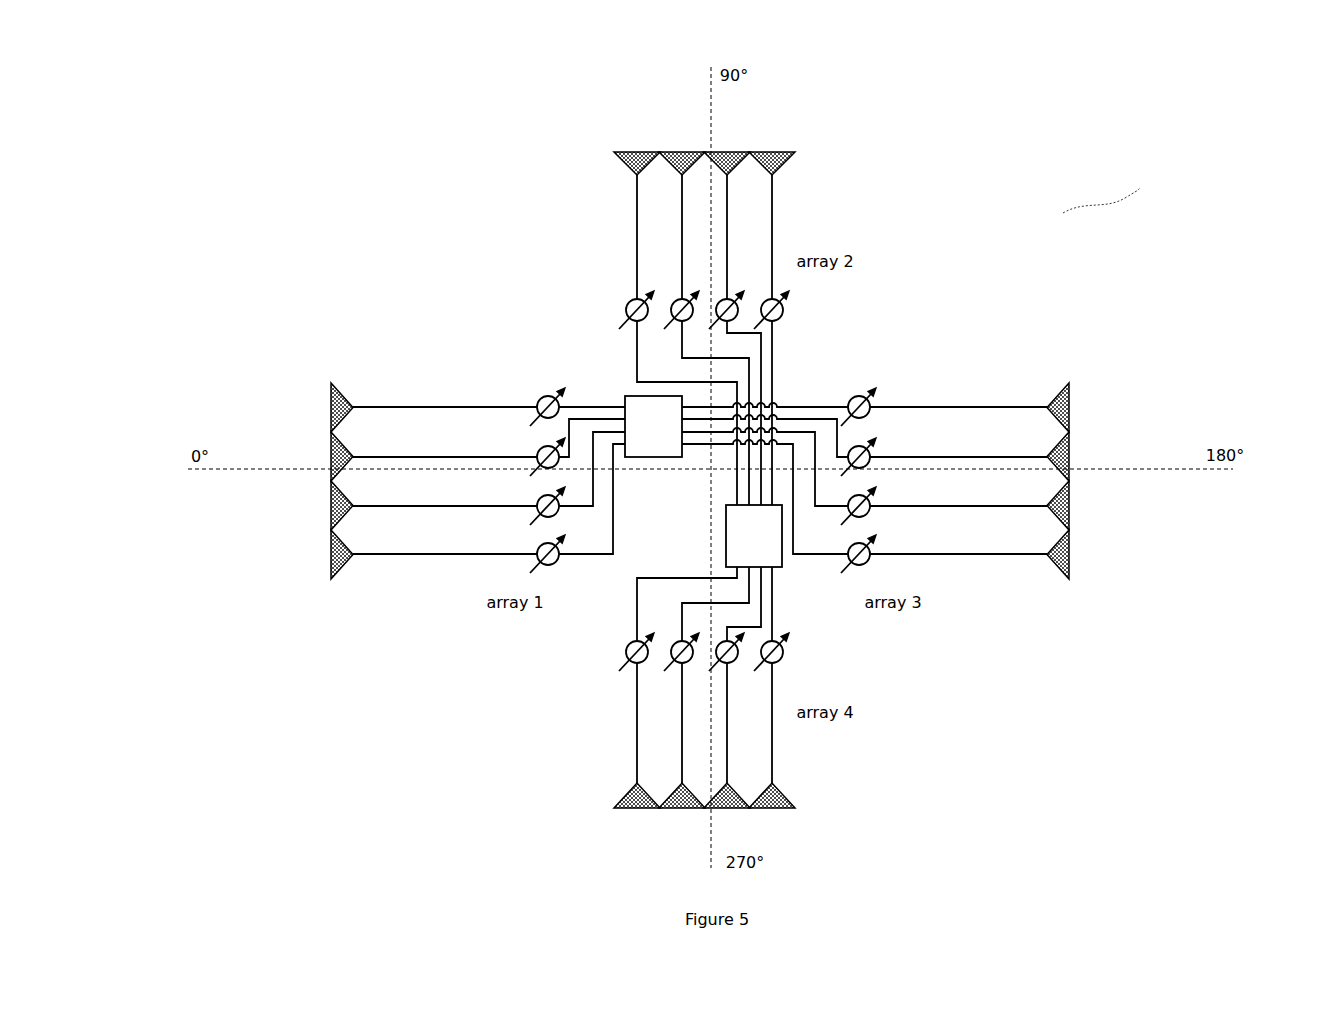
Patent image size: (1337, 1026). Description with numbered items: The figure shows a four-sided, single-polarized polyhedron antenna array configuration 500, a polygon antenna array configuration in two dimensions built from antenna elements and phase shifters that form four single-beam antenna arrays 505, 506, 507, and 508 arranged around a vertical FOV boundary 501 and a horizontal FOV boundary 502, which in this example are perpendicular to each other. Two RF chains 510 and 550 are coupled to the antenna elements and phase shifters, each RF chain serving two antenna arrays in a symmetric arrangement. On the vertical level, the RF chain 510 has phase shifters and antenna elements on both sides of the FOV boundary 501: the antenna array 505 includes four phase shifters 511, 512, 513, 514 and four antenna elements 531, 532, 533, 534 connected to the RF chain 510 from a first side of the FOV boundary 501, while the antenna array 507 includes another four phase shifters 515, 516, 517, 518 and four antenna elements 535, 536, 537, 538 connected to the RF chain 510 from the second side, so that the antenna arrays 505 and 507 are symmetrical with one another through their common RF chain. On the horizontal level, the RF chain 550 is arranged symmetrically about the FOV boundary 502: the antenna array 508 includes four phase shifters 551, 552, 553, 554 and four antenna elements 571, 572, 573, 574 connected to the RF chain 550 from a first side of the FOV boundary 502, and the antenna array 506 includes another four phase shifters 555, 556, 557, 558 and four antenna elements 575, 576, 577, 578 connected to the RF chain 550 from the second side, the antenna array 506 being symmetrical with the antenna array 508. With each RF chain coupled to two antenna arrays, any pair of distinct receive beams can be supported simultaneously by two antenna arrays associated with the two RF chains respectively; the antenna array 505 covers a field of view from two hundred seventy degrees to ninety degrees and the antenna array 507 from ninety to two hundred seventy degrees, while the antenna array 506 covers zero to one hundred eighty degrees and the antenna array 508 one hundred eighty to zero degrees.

The single-polarized polyhedron antenna array configuration 500 is at (1117, 184).
The vertical FOV boundary 501 is at (710, 459).
The horizontal FOV boundary 502 is at (727, 467).
The antenna array 505 is at (123, 467).
The antenna array 506 is at (711, 18).
The antenna array 507 is at (1315, 467).
The antenna array 508 is at (711, 891).
The RF chain 510 is at (639, 410).
The phase shifter 511 is at (489, 403).
The phase shifter 512 is at (489, 447).
The phase shifter 513 is at (489, 478).
The phase shifter 514 is at (489, 508).
The phase shifter 515 is at (864, 403).
The phase shifter 516 is at (864, 445).
The phase shifter 517 is at (864, 476).
The phase shifter 518 is at (864, 506).
The antenna element 531 is at (301, 407).
The antenna element 532 is at (301, 456).
The antenna element 533 is at (301, 505).
The antenna element 534 is at (301, 554).
The antenna element 535 is at (1094, 407).
The antenna element 536 is at (1094, 456).
The antenna element 537 is at (1094, 505).
The antenna element 538 is at (1094, 554).
The RF chain 550 is at (770, 552).
The phase shifter 551 is at (661, 675).
The phase shifter 552 is at (696, 675).
The phase shifter 553 is at (725, 675).
The phase shifter 554 is at (761, 675).
The phase shifter 555 is at (663, 340).
The phase shifter 556 is at (696, 340).
The phase shifter 557 is at (725, 340).
The phase shifter 558 is at (761, 340).
The antenna element 571 is at (637, 811).
The antenna element 572 is at (682, 811).
The antenna element 573 is at (727, 811).
The antenna element 574 is at (772, 811).
The antenna element 575 is at (637, 150).
The antenna element 576 is at (682, 150).
The antenna element 577 is at (727, 150).
The antenna element 578 is at (772, 150).